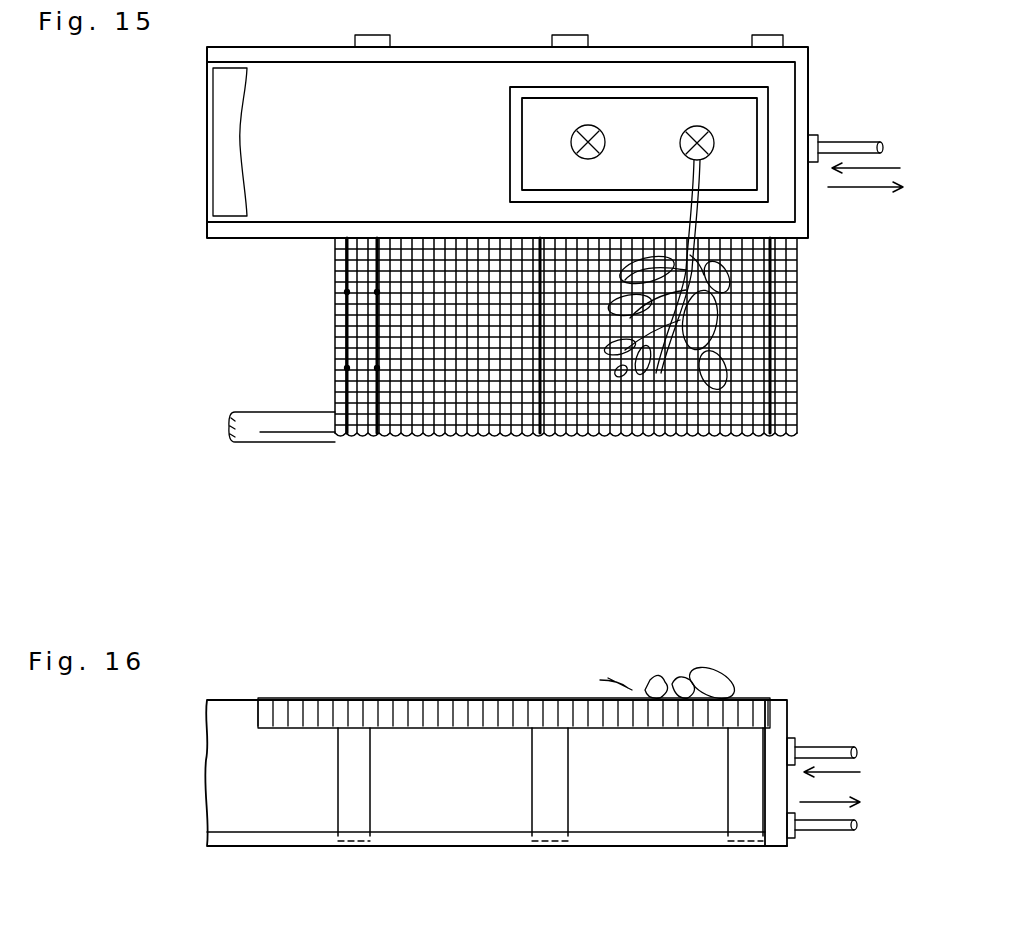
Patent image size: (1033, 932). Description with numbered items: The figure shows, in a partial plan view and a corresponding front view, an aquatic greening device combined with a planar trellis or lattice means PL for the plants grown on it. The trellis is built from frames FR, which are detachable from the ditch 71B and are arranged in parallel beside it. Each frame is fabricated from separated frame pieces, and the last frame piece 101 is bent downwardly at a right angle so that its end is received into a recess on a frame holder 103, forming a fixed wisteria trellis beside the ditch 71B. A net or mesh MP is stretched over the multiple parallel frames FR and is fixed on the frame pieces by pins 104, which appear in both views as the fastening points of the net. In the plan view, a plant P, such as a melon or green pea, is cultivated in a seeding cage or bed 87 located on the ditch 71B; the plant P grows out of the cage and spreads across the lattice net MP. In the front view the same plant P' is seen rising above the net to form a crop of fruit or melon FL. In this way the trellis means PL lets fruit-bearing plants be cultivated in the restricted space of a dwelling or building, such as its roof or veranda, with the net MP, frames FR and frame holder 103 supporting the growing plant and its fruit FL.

In FIG. 15, the ditch 71B is at (701, 39).
In FIG. 16, the ditch 71B is at (803, 722).
In FIG. 15, the seeding cage or bed 87 is at (682, 149).
In FIG. 15, the plant P is at (682, 248).
In FIG. 15, the pins 104 is at (372, 366).
In FIG. 16, the pins 104 is at (360, 728).
In FIG. 15, the planar trellis or lattice means PL is at (247, 368).
In FIG. 15, the fruit or melon FL is at (717, 327).
In FIG. 16, the fruit or melon FL is at (725, 680).
In FIG. 15, the net or mesh MP is at (470, 437).
In FIG. 16, the frame piece 101 is at (730, 780).
In FIG. 16, the frames FR is at (372, 800).
In FIG. 16, the frame holder 103 is at (497, 836).
In FIG. 16, the plant P' is at (620, 661).